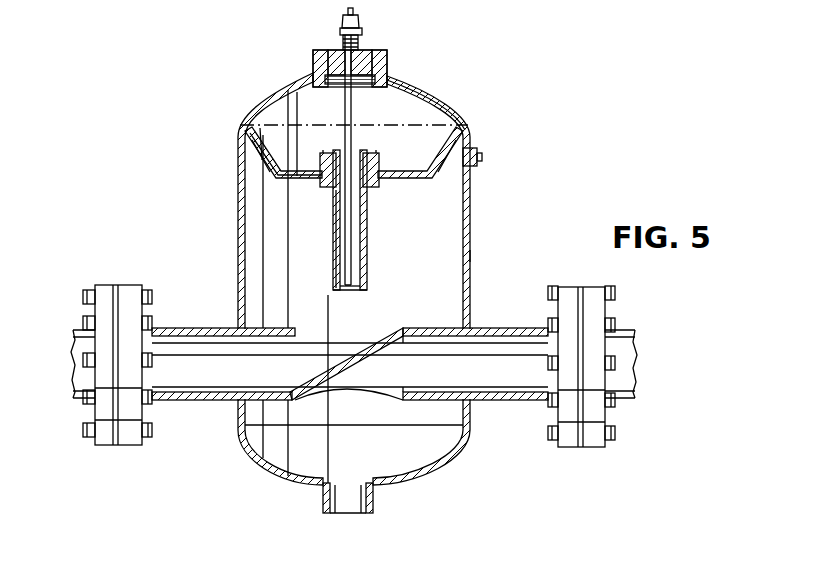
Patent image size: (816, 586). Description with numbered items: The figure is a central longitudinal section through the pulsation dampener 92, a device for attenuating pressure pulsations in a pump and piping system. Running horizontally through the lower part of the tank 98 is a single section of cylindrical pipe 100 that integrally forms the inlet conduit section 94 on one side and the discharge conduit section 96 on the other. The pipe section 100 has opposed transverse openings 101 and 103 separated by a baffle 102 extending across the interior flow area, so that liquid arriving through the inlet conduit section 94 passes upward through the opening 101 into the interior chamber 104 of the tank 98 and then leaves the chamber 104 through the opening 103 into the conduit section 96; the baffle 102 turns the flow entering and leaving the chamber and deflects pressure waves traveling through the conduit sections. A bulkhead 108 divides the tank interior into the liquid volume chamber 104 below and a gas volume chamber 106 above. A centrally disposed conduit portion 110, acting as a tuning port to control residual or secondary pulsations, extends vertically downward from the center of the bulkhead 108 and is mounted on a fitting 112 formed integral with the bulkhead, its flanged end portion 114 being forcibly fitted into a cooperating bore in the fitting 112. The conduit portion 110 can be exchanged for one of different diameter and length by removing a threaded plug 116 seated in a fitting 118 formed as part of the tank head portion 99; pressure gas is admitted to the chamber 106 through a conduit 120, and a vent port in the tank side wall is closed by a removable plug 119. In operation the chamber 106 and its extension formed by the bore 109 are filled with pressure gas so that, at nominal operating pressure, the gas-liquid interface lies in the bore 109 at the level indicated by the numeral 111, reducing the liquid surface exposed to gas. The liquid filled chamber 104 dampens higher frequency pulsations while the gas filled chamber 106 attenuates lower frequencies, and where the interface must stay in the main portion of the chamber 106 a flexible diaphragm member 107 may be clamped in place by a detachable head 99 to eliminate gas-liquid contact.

The pulsation dampener 92 is at (470, 210).
The inlet conduit section 94 is at (187, 401).
The discharge conduit section 96 is at (496, 401).
The tank 98 is at (468, 255).
The tank head portion 99 is at (415, 84).
The cylindrical pipe section 100 is at (433, 327).
The transverse opening 101 is at (312, 343).
The baffle 102 is at (350, 372).
The transverse opening 103 is at (397, 393).
The liquid volume chamber 104 is at (415, 279).
The gas volume chamber 106 is at (362, 118).
The flexible diaphragm member 107 is at (282, 127).
The bulkhead 108 is at (277, 180).
The bore 109 is at (362, 228).
The conduit portion 110 is at (345, 243).
The gas-liquid interface 111 is at (366, 289).
The fitting 112 is at (332, 192).
The flanged end portion 114 is at (372, 152).
The threaded plug 116 is at (368, 50).
The fitting 118 is at (318, 62).
The removable plug 119 is at (477, 156).
The conduit 120 is at (354, 12).